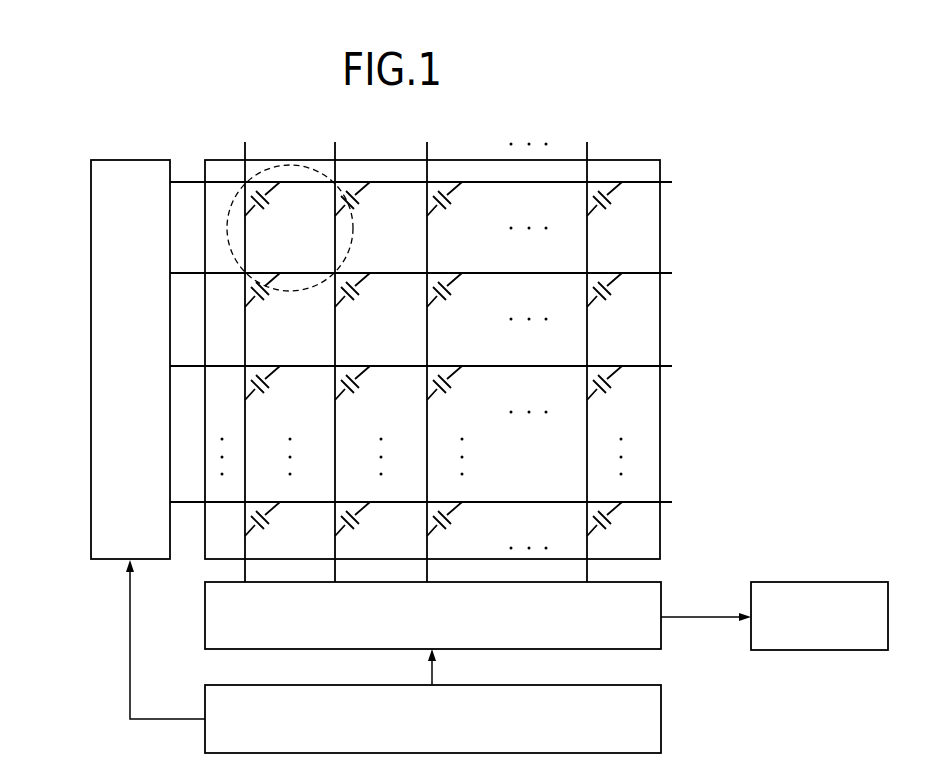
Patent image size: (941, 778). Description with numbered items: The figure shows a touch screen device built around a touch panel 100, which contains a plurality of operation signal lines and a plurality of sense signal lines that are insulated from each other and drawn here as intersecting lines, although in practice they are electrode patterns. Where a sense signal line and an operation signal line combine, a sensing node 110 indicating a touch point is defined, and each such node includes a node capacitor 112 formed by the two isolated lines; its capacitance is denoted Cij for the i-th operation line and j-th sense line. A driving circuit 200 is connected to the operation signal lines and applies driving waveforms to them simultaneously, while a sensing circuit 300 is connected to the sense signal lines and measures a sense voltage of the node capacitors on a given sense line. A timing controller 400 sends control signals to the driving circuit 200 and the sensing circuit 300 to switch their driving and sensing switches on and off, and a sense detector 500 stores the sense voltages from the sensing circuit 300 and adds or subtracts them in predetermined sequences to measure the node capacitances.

The touch panel 100 is at (436, 347).
The sensing node 110 is at (290, 165).
The node capacitor 112 is at (272, 218).
The driving circuit 200 is at (131, 160).
The sensing circuit 300 is at (661, 593).
The timing controller 400 is at (661, 720).
The sense detector 500 is at (820, 582).